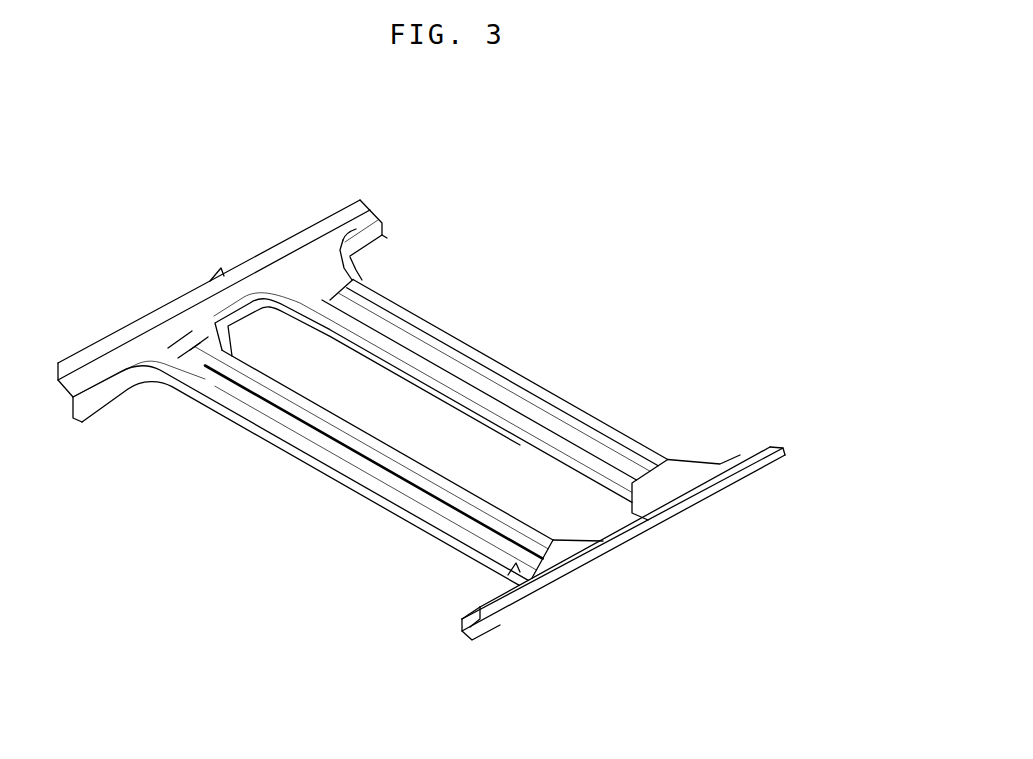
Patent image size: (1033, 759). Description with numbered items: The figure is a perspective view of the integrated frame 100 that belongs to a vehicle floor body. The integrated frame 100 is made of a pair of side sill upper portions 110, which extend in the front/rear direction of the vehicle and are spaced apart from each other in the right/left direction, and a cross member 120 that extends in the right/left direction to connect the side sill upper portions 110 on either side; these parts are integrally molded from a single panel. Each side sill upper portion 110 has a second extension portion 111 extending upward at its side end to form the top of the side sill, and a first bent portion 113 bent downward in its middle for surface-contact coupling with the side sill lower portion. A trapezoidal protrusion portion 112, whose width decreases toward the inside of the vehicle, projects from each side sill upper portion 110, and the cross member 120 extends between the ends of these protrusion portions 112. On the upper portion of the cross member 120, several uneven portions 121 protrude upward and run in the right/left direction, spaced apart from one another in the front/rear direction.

The integrated frame 100 is at (722, 145).
The side sill upper portion 110 is at (384, 208).
The second extension portion 111 is at (163, 312).
The protrusion portion 112 is at (328, 273).
The first bent portion 113 is at (68, 404).
The cross member 120 is at (358, 505).
The uneven portion 121 is at (337, 423).